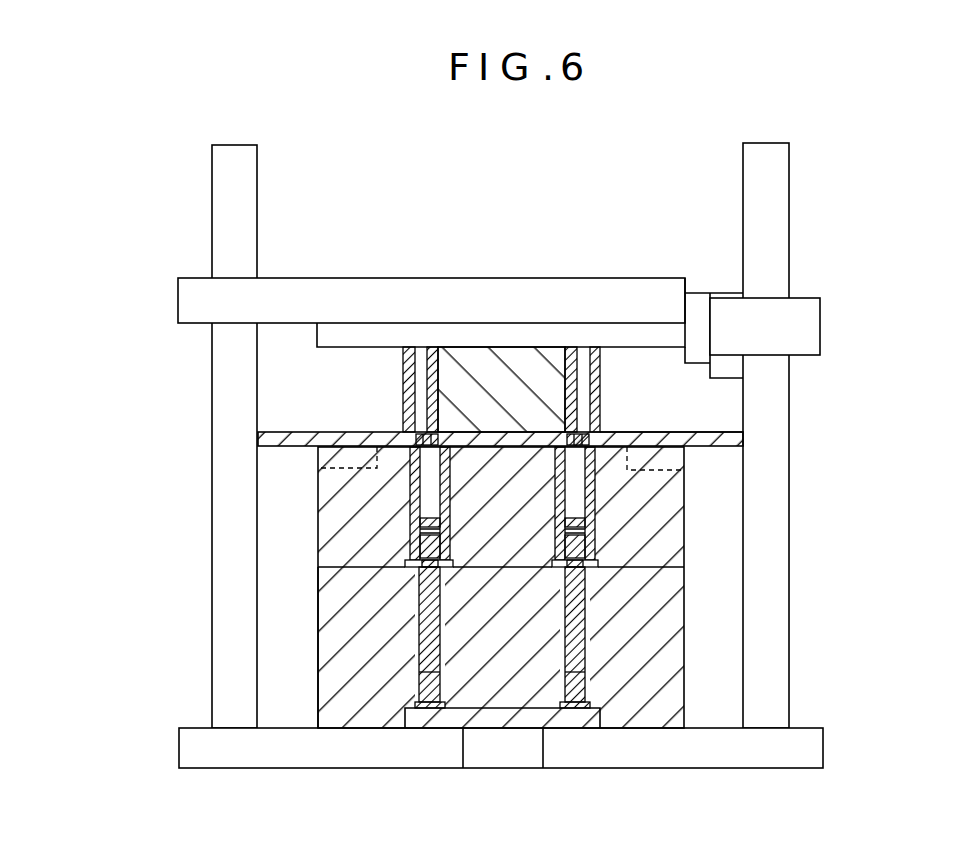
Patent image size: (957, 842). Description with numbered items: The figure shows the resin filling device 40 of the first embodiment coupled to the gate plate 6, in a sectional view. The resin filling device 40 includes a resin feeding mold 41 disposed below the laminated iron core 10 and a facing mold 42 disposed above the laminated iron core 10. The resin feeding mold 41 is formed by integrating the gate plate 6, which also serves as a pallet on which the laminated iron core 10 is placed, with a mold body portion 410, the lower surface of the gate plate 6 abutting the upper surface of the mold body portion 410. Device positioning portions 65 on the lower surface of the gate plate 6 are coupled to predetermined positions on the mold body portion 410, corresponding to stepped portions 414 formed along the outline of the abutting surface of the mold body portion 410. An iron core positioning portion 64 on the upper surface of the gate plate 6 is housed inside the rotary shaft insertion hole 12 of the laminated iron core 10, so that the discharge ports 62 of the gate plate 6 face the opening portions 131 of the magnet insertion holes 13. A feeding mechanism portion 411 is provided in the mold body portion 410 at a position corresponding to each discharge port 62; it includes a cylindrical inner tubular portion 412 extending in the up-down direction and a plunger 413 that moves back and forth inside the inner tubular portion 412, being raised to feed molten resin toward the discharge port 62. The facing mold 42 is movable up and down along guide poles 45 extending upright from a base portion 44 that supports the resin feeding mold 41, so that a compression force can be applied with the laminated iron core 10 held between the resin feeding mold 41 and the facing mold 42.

The resin filling device 40 is at (613, 153).
The facing mold 42 is at (445, 278).
The guide poles 45 is at (237, 219).
The opening portions 131 is at (407, 360).
The magnet insertion holes 13 is at (421, 430).
The iron core positioning portion 64 is at (490, 360).
The rotary shaft insertion hole 12 is at (573, 428).
The laminated iron core 10 is at (402, 390).
The gate plate 6 is at (382, 418).
The discharge port 62 is at (650, 433).
The stepped portions 414 is at (377, 456).
The device positioning portions 65 is at (318, 497).
The resin feeding mold 41 is at (203, 544).
The mold body portion 410 is at (310, 518).
The inner tubular portion 412 is at (410, 502).
The plunger 413 is at (420, 620).
The feeding mechanism portion 411 is at (413, 657).
The base portion 44 is at (790, 747).